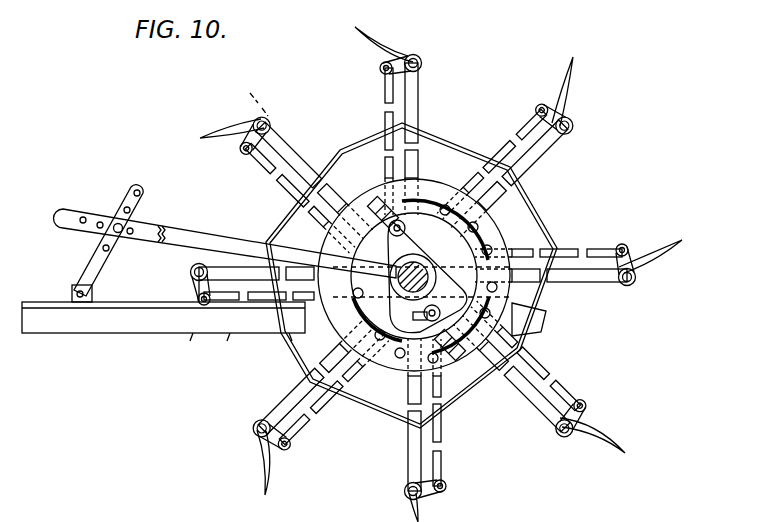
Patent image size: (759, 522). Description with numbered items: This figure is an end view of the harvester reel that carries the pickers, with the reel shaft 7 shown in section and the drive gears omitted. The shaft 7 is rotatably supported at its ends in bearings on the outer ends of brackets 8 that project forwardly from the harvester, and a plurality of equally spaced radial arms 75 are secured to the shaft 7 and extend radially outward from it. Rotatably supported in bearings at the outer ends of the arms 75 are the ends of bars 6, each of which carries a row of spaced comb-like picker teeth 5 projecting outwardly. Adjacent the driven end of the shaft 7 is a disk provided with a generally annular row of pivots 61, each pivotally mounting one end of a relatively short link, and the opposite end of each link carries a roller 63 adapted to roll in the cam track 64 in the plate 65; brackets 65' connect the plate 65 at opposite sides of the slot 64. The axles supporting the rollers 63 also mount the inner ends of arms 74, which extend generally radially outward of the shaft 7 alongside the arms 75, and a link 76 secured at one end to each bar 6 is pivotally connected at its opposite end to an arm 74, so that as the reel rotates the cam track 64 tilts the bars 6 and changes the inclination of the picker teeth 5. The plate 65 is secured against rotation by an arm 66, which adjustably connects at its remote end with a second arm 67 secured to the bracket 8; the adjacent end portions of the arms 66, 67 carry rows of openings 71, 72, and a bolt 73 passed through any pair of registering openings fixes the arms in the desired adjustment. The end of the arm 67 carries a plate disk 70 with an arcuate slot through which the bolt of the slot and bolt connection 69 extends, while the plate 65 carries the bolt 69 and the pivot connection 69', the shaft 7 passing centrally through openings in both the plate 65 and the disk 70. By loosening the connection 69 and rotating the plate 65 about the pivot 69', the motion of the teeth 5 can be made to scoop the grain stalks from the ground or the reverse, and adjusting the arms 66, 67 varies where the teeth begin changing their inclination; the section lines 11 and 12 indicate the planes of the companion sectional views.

The picker teeth 5 is at (392, 50).
The bars 6 is at (423, 63).
The shaft 7 is at (437, 271).
The brackets 8 is at (231, 334).
The section line 11 is at (360, 169).
The section line 12 is at (252, 83).
The pivots 61 is at (420, 197).
The roller 63 is at (493, 238).
The cam track 64 is at (493, 220).
The plate 65 is at (446, 275).
The brackets 65' is at (414, 285).
The arm 66 is at (150, 226).
The second arm 67 is at (88, 271).
The slot and bolt connection 69 is at (409, 355).
The pivot connection 69' is at (419, 226).
The disk 70 is at (450, 291).
The openings 71 is at (100, 221).
The openings 72 is at (128, 207).
The bolt 73 is at (118, 236).
The arms 74 is at (385, 100).
The radial arms 75 is at (419, 92).
The link 76 is at (394, 60).